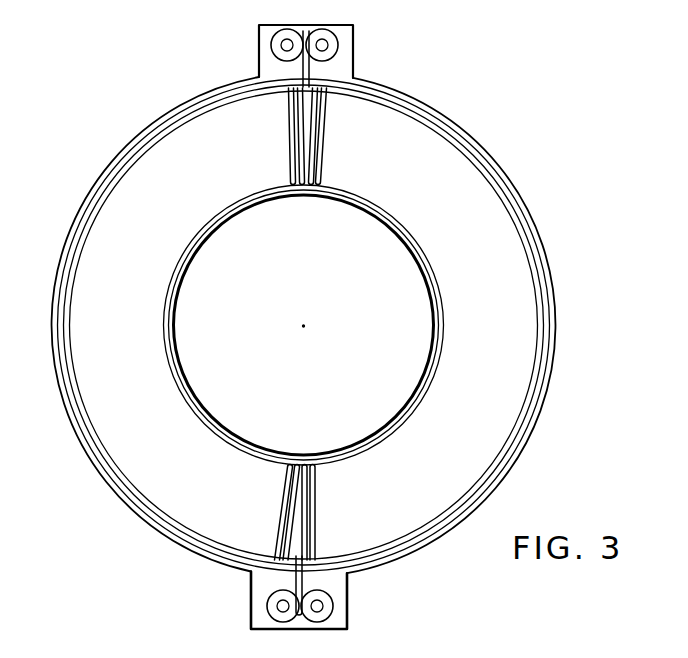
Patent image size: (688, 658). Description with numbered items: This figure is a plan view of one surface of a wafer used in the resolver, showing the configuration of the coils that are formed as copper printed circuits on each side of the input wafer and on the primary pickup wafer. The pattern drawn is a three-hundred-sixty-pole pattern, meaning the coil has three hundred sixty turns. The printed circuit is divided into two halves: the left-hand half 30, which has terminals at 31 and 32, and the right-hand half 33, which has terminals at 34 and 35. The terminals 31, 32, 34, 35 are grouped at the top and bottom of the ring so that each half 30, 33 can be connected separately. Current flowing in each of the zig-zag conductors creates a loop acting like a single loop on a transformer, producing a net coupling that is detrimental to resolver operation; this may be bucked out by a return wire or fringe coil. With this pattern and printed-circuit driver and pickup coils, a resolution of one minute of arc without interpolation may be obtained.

The left-hand half 30 is at (290, 125).
The terminal 31 is at (279, 41).
The terminal 32 is at (274, 613).
The right-hand half 33 is at (326, 123).
The terminal 34 is at (315, 35).
The terminal 35 is at (331, 615).